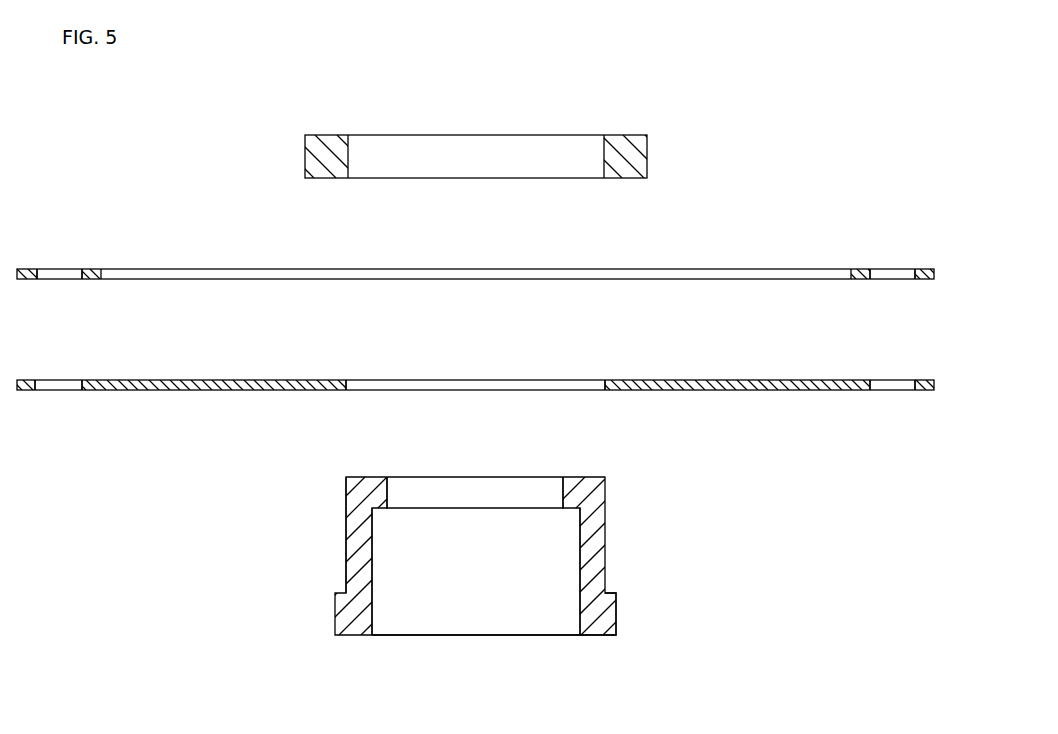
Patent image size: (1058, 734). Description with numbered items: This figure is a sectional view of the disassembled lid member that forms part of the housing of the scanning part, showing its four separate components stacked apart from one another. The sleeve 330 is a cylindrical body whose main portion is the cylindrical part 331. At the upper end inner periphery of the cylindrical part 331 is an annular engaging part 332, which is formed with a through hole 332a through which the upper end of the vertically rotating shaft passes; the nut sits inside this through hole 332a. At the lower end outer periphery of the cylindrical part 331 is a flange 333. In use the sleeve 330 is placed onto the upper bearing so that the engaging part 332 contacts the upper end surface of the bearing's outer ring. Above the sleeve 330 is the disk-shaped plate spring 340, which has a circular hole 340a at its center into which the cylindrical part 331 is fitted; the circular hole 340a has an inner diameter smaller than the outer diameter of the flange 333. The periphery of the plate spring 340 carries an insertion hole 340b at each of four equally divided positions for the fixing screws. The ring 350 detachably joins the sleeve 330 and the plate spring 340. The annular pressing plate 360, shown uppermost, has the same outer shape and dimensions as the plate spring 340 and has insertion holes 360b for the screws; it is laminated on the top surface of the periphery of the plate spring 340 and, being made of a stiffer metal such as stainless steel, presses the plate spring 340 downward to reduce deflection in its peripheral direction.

The sleeve 330 is at (605, 535).
The cylindrical part 331 is at (346, 556).
The engaging part 332 is at (376, 511).
The through hole 332a is at (522, 498).
The flange 333 is at (603, 592).
The plate spring 340 is at (208, 380).
The circular hole 340a is at (468, 380).
The insertion hole 340b is at (63, 380).
The ring 350 is at (647, 157).
The pressing plate 360 is at (204, 269).
The insertion hole 360b is at (57, 269).